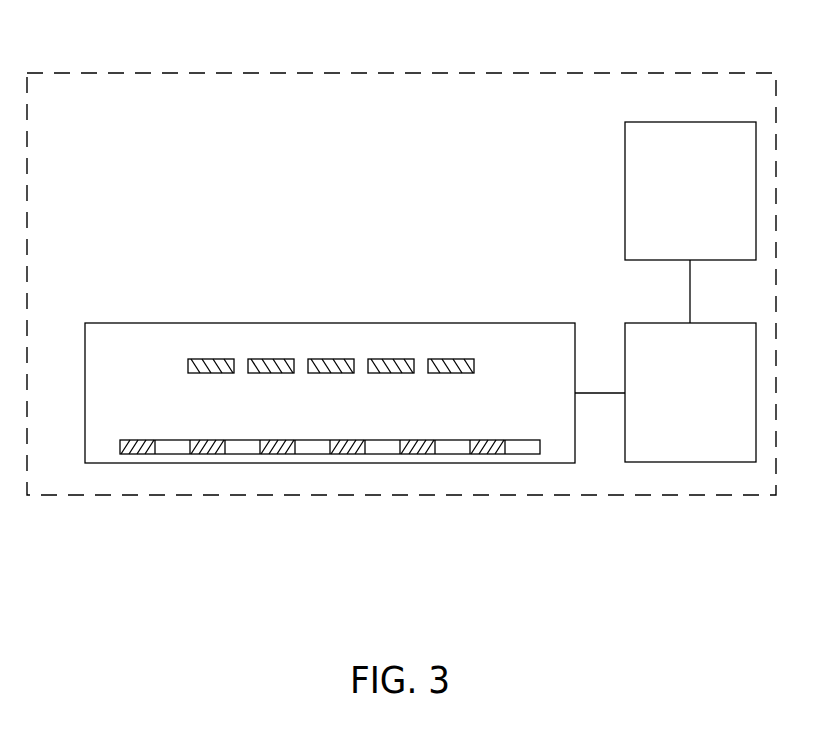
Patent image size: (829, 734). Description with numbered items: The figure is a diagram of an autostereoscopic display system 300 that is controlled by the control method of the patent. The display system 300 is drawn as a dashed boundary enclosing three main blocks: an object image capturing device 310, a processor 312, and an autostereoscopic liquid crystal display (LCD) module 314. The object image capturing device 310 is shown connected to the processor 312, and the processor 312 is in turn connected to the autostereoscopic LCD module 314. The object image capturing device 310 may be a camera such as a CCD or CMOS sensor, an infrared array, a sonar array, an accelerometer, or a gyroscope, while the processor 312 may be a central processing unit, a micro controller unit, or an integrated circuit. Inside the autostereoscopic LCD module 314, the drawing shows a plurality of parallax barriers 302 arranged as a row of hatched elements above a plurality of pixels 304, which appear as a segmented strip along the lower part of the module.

The autostereoscopic display system 300 is at (594, 73).
The parallax barriers 302 is at (176, 356).
The pixels 304 is at (116, 446).
The object image capturing device 310 is at (673, 202).
The processor 312 is at (673, 404).
The autostereoscopic liquid crystal display (LCD) module 314 is at (118, 323).